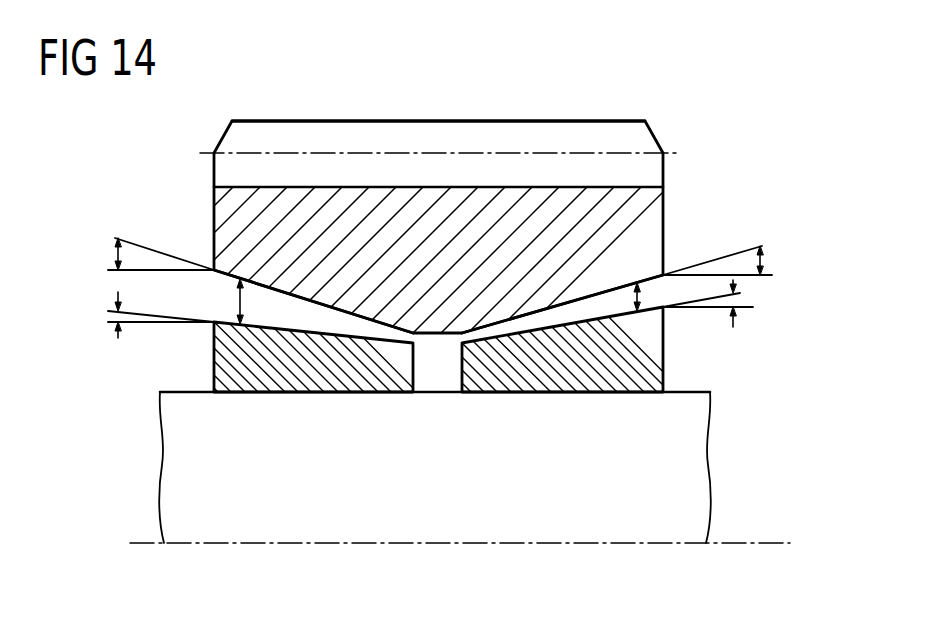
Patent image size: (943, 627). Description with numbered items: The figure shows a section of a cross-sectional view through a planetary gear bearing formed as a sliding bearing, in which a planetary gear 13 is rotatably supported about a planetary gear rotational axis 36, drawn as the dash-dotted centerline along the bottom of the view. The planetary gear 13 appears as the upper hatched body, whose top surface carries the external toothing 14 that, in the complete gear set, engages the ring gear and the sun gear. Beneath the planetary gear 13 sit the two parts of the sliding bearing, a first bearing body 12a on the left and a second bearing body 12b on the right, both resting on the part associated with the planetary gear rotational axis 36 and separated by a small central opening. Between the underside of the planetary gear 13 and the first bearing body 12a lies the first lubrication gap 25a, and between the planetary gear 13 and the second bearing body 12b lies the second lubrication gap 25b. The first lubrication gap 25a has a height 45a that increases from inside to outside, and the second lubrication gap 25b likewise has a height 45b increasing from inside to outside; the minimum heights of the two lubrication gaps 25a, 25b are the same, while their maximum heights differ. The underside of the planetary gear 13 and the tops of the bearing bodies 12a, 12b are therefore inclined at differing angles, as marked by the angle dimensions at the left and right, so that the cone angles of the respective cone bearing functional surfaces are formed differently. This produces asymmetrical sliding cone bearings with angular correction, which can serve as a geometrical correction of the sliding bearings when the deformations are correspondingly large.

The planetary gear 13 is at (365, 230).
The external toothing 14 is at (455, 135).
The first bearing body 12a is at (306, 367).
The second bearing body 12b is at (553, 367).
The first lubrication gap 25a is at (300, 310).
The second lubrication gap 25b is at (566, 312).
The height of the first lubrication gap 45a is at (236, 300).
The height of the second lubrication gap 45b is at (660, 300).
The planetary gear rotational axis 36 is at (777, 543).